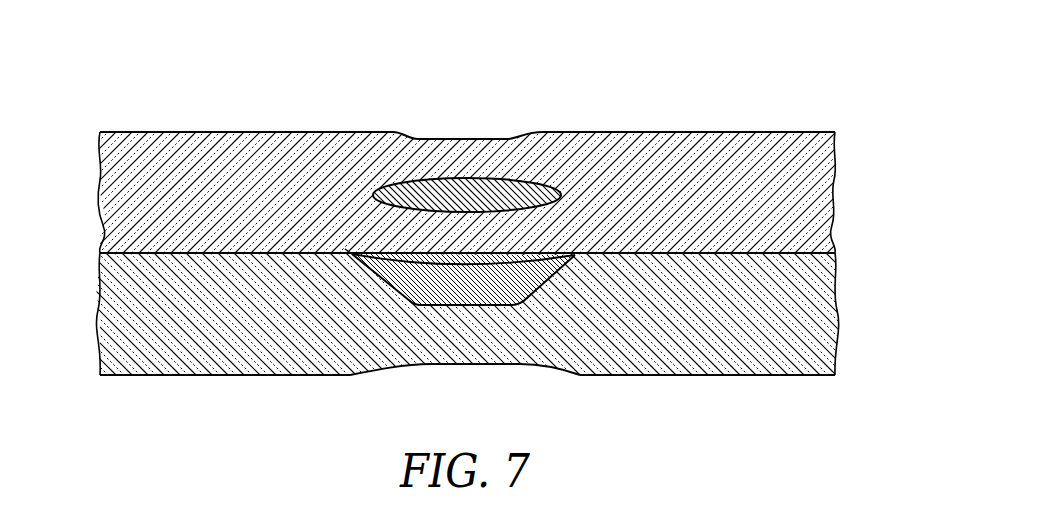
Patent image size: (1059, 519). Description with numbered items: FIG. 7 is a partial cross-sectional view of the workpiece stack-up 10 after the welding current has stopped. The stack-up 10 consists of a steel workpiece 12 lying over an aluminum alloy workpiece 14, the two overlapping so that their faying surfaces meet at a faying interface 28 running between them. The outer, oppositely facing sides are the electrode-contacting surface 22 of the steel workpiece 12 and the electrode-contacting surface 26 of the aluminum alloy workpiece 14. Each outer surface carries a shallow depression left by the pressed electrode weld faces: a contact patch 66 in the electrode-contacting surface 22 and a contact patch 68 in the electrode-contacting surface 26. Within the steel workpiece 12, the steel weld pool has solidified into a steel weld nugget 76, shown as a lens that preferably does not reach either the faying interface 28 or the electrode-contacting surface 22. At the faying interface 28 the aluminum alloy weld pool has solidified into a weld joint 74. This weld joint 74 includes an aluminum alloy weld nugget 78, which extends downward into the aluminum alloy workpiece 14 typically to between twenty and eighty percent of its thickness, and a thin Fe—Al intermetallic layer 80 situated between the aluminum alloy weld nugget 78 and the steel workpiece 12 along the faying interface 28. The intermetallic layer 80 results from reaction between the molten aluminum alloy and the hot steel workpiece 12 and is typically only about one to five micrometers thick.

The workpiece stack-up 10 is at (478, 224).
The steel workpiece 12 is at (810, 205).
The aluminum alloy workpiece 14 is at (810, 292).
The electrode-contacting surface of the steel workpiece 22 is at (467, 80).
The electrode-contacting surface of the aluminum alloy workpiece 26 is at (447, 393).
The faying interface 28 is at (165, 253).
The contact patch 66 is at (461, 139).
The contact patch 68 is at (440, 368).
The weld joint 74 is at (345, 246).
The steel weld nugget 76 is at (497, 197).
The aluminum alloy weld nugget 78 is at (520, 288).
The Fe—Al intermetallic layer 80 is at (570, 254).